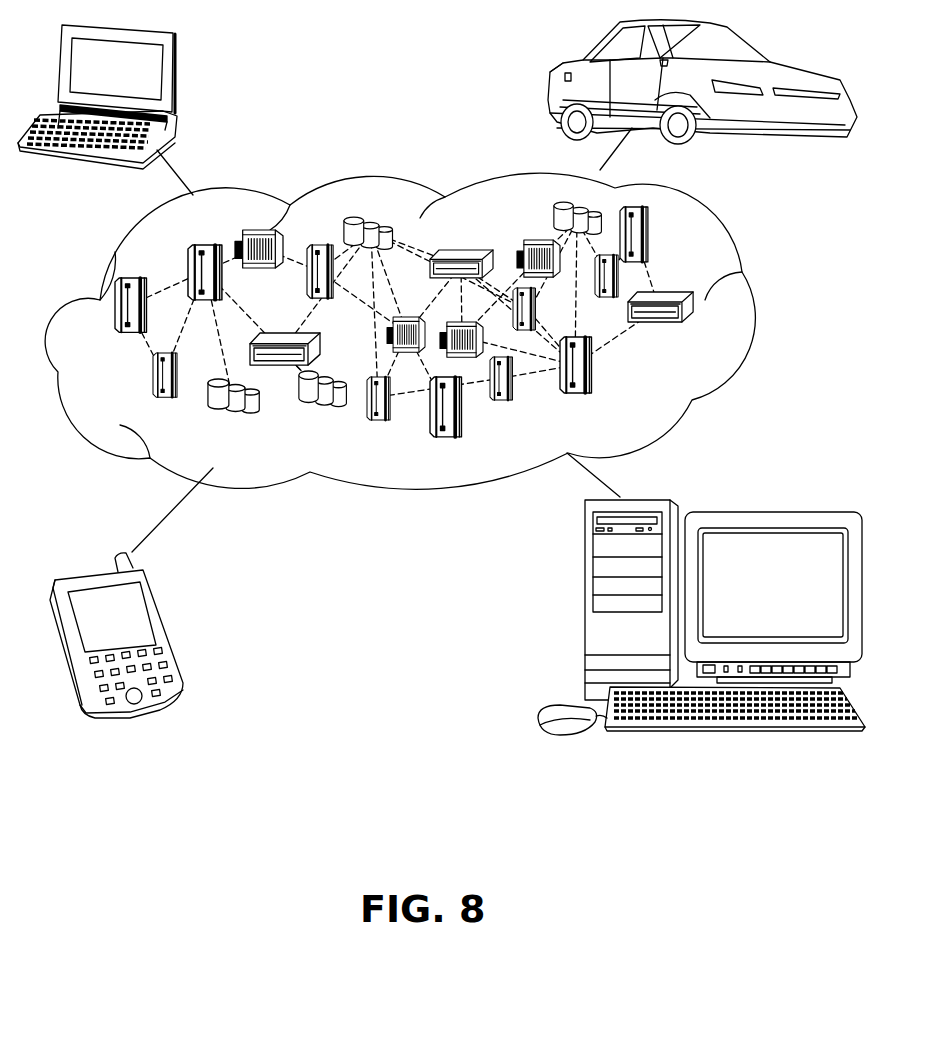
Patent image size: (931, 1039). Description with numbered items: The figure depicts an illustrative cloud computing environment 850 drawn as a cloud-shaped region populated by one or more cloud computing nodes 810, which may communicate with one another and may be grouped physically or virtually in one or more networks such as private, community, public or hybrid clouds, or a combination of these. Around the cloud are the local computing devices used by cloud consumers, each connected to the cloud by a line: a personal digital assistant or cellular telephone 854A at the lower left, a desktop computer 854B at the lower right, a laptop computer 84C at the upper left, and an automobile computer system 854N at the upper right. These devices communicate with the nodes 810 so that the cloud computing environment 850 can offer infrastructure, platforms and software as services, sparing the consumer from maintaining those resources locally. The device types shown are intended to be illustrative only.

The laptop computer 84C is at (173, 73).
The automobile computer system 854N is at (556, 78).
The cloud computing environment 850 is at (740, 268).
The cloud computing nodes 810 is at (712, 328).
The personal digital assistant or cellular telephone 854A is at (167, 630).
The desktop computer 854B is at (585, 608).